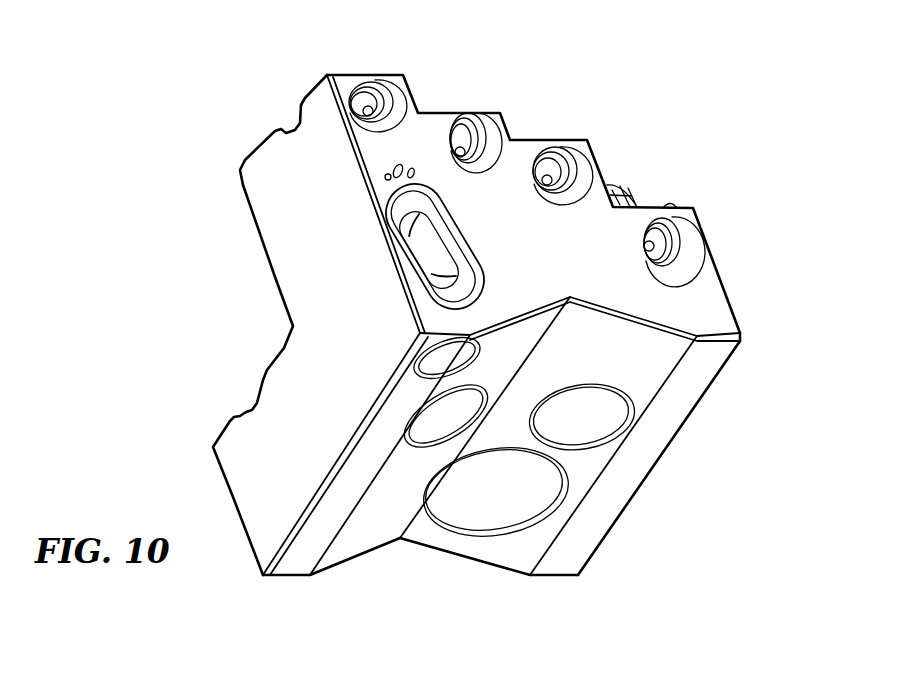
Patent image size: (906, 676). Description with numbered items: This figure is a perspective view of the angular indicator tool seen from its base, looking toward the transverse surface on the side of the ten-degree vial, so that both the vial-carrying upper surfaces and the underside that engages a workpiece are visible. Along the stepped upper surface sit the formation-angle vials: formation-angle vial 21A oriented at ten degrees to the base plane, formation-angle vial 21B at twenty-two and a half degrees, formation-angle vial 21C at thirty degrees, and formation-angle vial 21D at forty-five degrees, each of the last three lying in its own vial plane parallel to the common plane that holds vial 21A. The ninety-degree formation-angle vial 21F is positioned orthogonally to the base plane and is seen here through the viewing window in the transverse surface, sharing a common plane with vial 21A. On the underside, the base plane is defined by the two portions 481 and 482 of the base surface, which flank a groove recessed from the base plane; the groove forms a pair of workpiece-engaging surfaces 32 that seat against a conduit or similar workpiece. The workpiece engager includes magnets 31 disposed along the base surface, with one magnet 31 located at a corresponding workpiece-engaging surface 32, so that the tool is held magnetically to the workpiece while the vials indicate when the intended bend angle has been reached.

The formation-angle vial 21A is at (369, 110).
The formation-angle vial 21B is at (461, 150).
The formation-angle vial 21C is at (548, 178).
The formation-angle vial 21D is at (660, 245).
The 90° formation-angle vial 21F is at (420, 248).
The magnets 31 is at (467, 397).
The workpiece-engaging surfaces 32 is at (445, 535).
The portion of base surface 481 is at (287, 567).
The portion of base surface 482 is at (580, 545).